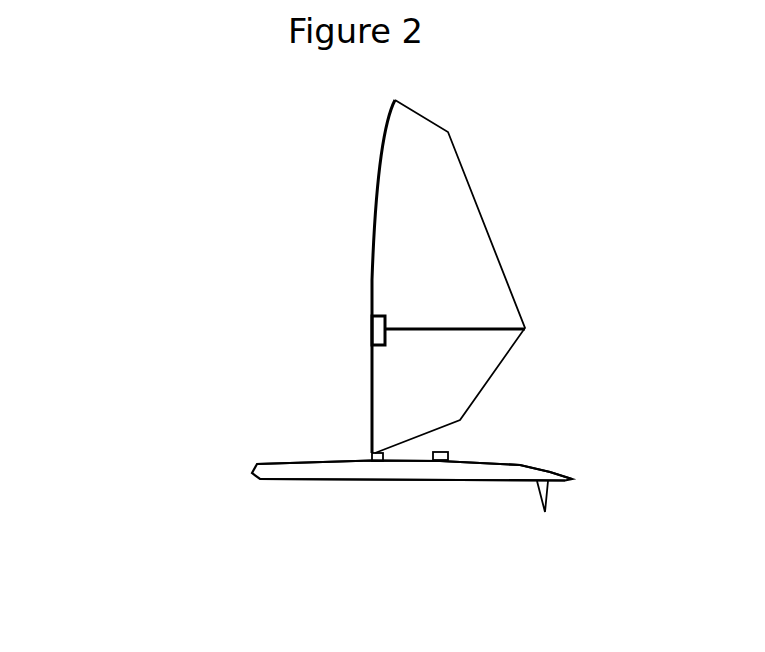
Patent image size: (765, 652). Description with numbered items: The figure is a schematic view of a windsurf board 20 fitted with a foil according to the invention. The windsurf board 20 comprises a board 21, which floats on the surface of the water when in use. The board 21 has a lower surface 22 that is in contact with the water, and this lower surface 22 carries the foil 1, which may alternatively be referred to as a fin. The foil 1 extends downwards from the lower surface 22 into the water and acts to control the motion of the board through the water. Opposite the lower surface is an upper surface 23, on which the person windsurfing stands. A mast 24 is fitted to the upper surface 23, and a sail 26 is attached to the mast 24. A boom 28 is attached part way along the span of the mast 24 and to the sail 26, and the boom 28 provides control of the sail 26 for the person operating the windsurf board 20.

The foil 1 is at (527, 523).
The windsurf board 20 is at (203, 368).
The board 21 is at (250, 473).
The lower surface 22 is at (295, 479).
The upper surface 23 is at (295, 462).
The mast 24 is at (370, 252).
The sail 26 is at (458, 208).
The boom 28 is at (503, 328).